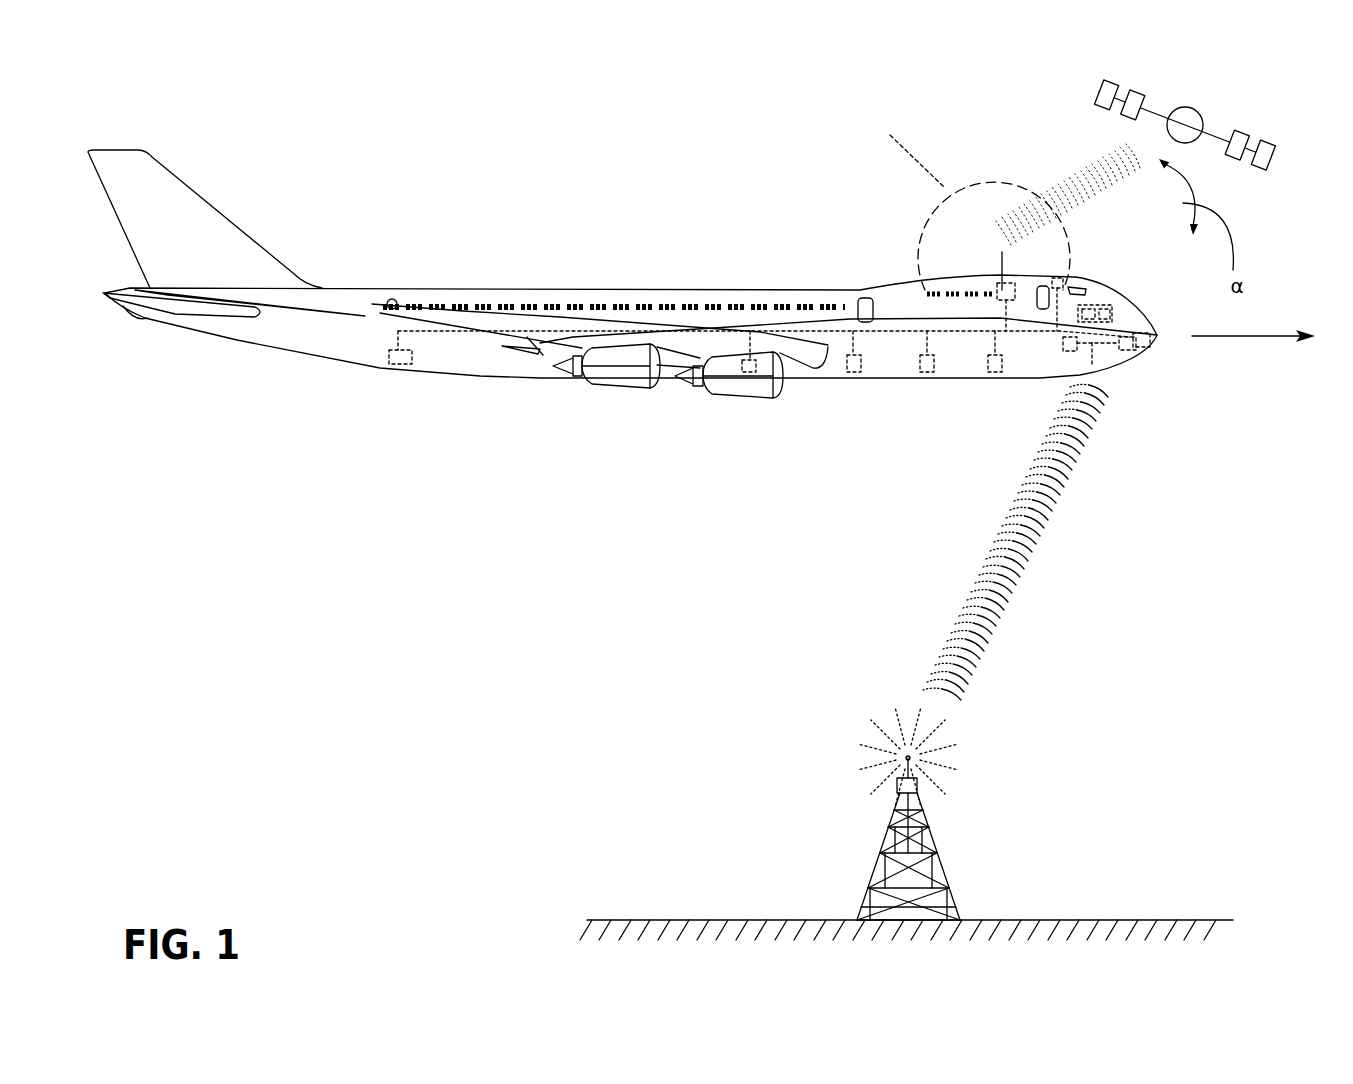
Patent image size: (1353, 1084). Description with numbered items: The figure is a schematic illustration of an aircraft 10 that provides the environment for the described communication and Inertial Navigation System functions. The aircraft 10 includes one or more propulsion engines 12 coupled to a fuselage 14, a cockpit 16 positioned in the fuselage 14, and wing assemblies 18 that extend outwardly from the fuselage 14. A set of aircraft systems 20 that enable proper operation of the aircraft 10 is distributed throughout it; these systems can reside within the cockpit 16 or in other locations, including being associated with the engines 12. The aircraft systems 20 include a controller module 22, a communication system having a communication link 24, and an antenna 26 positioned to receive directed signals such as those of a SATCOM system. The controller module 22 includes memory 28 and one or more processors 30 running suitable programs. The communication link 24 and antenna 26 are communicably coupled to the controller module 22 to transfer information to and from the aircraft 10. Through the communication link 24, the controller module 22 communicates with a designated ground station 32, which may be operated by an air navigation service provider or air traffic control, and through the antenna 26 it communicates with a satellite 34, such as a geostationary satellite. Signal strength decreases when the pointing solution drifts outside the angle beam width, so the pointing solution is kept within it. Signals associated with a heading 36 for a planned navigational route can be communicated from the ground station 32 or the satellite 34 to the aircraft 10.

The aircraft 10 is at (654, 295).
The propulsion engine 12 is at (627, 380).
The fuselage 14 is at (885, 290).
The cockpit 16 is at (1104, 306).
The wing assembly 18 is at (541, 352).
The aircraft system 20 is at (398, 366).
The controller module 22 is at (1123, 307).
The communication link 24 is at (1057, 274).
The antenna 26 is at (1002, 252).
The memory 28 is at (1090, 305).
The processor 30 is at (1112, 300).
The ground station 32 is at (942, 833).
The satellite 34 is at (1205, 90).
The heading 36 is at (1257, 337).